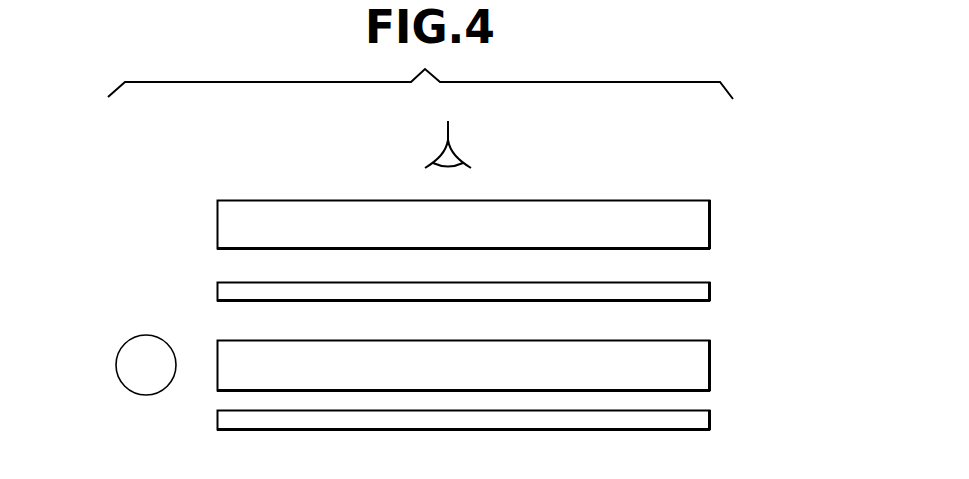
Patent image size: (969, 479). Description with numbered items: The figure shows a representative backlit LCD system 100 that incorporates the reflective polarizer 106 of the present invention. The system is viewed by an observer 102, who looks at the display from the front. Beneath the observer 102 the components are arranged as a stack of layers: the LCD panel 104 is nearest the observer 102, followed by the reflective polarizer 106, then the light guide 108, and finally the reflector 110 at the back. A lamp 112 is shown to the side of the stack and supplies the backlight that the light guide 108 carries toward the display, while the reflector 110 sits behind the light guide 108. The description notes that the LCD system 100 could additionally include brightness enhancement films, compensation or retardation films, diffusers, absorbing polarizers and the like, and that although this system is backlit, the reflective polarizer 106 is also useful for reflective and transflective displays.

The backlit LCD system 100 is at (689, 189).
The observer 102 is at (452, 147).
The LCD panel 104 is at (710, 215).
The reflective polarizer 106 is at (710, 296).
The light guide 108 is at (710, 367).
The reflector 110 is at (710, 425).
The lamp 112 is at (128, 337).